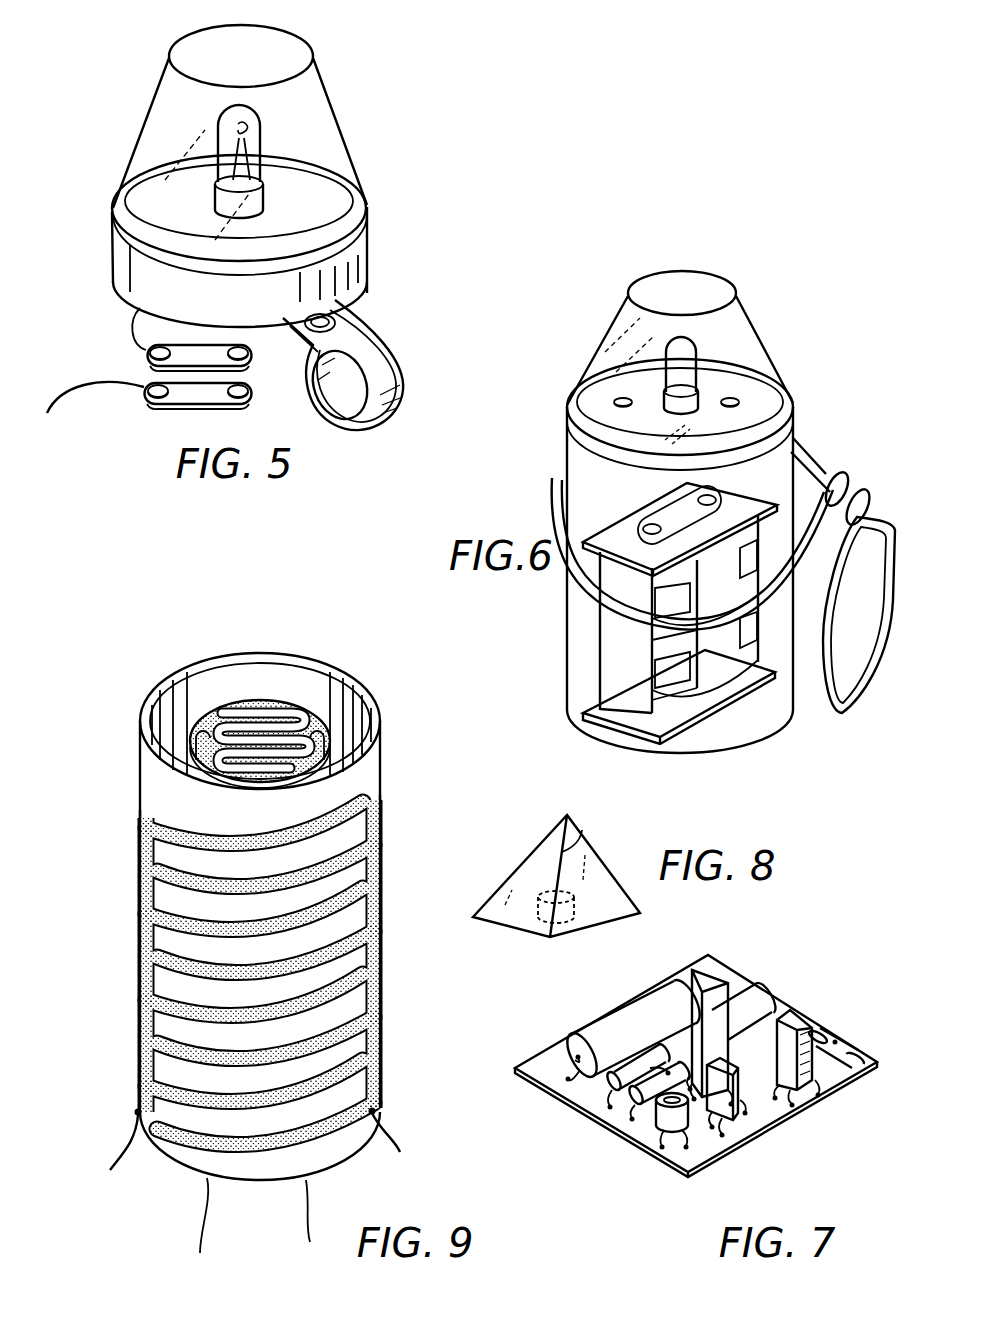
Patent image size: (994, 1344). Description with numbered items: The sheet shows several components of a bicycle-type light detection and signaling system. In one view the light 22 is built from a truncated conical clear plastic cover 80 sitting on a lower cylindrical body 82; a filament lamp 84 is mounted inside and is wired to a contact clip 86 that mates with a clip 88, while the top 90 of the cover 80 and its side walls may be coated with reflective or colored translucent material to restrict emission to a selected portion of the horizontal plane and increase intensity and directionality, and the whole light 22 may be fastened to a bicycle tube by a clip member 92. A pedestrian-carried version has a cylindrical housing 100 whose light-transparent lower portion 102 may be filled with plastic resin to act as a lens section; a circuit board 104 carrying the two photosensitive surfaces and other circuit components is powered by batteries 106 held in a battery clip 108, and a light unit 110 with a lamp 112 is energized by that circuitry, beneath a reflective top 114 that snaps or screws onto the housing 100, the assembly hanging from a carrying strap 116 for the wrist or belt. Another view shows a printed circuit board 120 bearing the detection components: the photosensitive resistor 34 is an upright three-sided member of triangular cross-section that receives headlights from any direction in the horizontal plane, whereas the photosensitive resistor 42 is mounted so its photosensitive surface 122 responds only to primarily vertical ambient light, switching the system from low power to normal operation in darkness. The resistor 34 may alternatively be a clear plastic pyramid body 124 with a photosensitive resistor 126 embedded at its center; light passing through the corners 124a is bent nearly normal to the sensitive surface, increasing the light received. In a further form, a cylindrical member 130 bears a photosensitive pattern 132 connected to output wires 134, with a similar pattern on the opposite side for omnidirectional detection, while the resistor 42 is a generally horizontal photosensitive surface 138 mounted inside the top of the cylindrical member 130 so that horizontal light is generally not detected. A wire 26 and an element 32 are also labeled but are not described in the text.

In FIG. 5, the light 22 is at (370, 92).
In FIG. 5, the wire 26 is at (68, 388).
In FIG. 7, the transistor 32 is at (832, 1040).
In FIG. 9, the photosensitive resistor 34 is at (137, 774).
In FIG. 8, the photosensitive resistor 34 is at (522, 842).
In FIG. 7, the photosensitive resistor 34 is at (713, 1008).
In FIG. 9, the photosensitive resistor 42 is at (288, 700).
In FIG. 7, the photosensitive resistor 42 is at (675, 1117).
In FIG. 5, the cover 80 is at (332, 82).
In FIG. 5, the lower cylindrical body 82 is at (327, 277).
In FIG. 5, the filament lamp 84 is at (253, 154).
In FIG. 5, the contact clip 86 is at (203, 353).
In FIG. 5, the clip 88 is at (203, 392).
In FIG. 5, the top 90 is at (220, 61).
In FIG. 5, the clip member 92 is at (378, 382).
In FIG. 6, the cylindrical housing 100 is at (815, 435).
In FIG. 6, the lower portion 102 is at (758, 722).
In FIG. 6, the circuit board 104 is at (676, 730).
In FIG. 6, the batteries 106 is at (742, 595).
In FIG. 6, the battery clip 108 is at (645, 655).
In FIG. 6, the light unit 110 is at (824, 374).
In FIG. 6, the lamp 112 is at (678, 370).
In FIG. 6, the top 114 is at (660, 297).
In FIG. 6, the carrying strap 116 is at (826, 469).
In FIG. 7, the printed circuit board 120 is at (860, 1033).
In FIG. 7, the photosensitive surface 122 is at (663, 1103).
In FIG. 8, the pyramid body 124 is at (520, 886).
In FIG. 8, the corners 124a is at (562, 852).
In FIG. 8, the photosensitive resistor 126 is at (573, 923).
In FIG. 9, the cylindrical member 130 is at (146, 704).
In FIG. 9, the photosensitive pattern 132 is at (186, 840).
In FIG. 9, the output wires 134 is at (137, 1113).
In FIG. 9, the photosensitive surface 138 is at (220, 713).